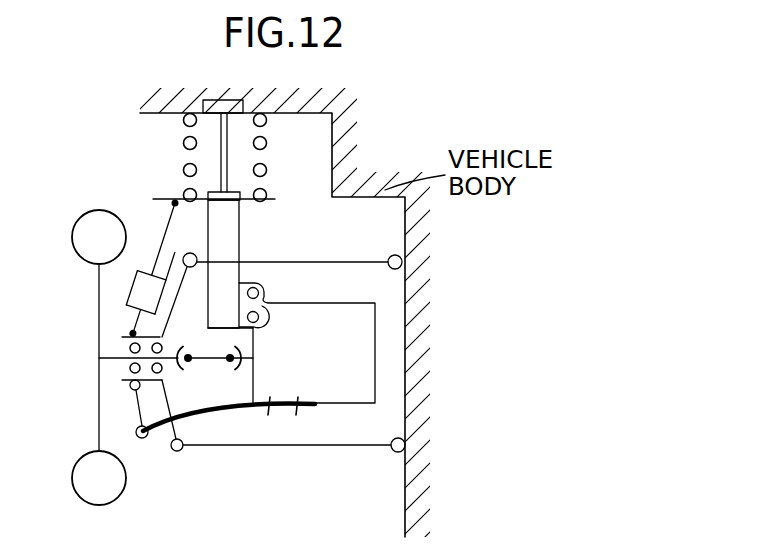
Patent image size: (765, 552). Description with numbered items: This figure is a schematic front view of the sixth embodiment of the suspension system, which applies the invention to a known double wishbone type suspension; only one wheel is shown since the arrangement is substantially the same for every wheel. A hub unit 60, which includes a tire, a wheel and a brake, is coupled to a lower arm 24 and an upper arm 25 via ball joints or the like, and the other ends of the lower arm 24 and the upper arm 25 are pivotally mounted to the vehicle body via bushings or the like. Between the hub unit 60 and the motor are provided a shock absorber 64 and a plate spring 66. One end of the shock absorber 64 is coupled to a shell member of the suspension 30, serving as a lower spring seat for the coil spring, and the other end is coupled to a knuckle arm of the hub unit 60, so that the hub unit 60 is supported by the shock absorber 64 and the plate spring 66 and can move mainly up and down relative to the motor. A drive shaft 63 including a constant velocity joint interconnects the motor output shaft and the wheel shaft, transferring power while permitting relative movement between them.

The suspension 30 is at (288, 179).
The upper arm 25 is at (343, 260).
The shock absorber 64 is at (143, 257).
The drive shaft 63 is at (213, 367).
The hub unit 60 is at (113, 400).
The lower arm 24 is at (193, 447).
The plate spring 66 is at (212, 412).